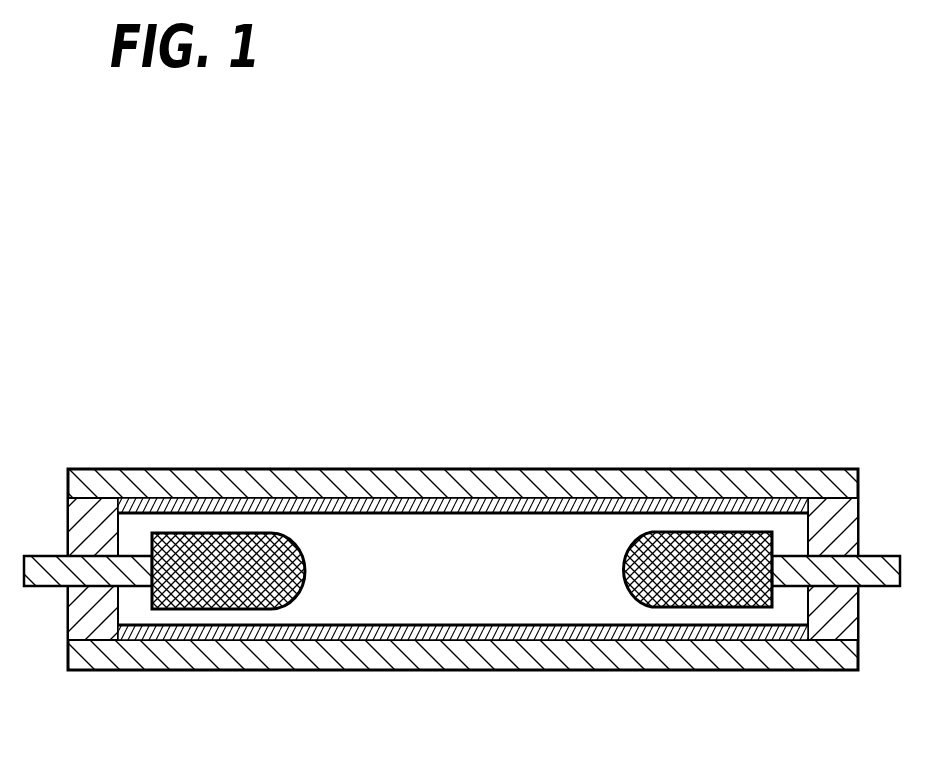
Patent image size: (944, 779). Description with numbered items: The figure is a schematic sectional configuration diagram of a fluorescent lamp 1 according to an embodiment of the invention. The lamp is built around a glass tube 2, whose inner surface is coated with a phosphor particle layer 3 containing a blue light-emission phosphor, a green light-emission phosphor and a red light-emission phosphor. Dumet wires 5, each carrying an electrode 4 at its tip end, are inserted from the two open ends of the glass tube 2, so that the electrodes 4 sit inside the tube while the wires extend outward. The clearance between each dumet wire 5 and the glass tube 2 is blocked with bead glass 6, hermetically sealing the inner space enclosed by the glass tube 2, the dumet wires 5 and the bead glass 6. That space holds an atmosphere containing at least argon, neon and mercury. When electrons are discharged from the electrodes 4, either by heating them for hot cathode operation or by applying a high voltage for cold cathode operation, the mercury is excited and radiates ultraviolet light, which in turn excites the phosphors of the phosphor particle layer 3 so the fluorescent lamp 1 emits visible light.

The fluorescent lamp 1 is at (243, 235).
The glass tube 2 is at (465, 486).
The phosphor particle layer 3 is at (310, 504).
The electrode 4 is at (688, 548).
The dumet wire 5 is at (887, 565).
The bead glass 6 is at (830, 513).